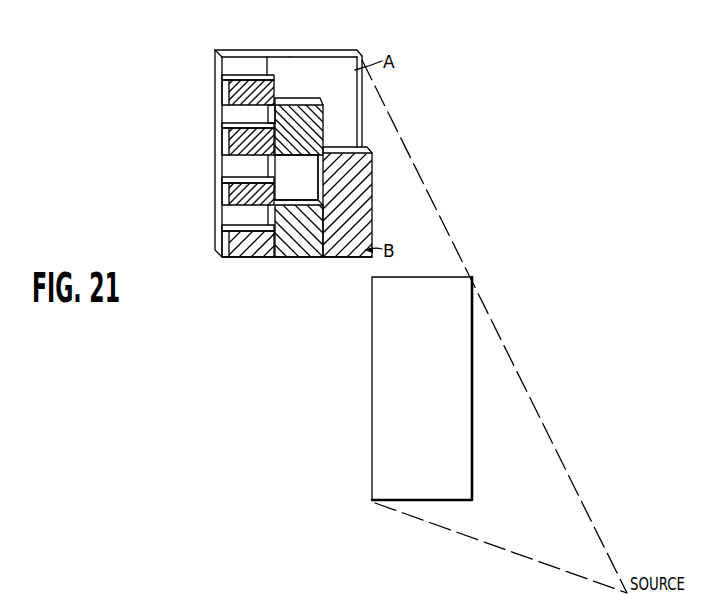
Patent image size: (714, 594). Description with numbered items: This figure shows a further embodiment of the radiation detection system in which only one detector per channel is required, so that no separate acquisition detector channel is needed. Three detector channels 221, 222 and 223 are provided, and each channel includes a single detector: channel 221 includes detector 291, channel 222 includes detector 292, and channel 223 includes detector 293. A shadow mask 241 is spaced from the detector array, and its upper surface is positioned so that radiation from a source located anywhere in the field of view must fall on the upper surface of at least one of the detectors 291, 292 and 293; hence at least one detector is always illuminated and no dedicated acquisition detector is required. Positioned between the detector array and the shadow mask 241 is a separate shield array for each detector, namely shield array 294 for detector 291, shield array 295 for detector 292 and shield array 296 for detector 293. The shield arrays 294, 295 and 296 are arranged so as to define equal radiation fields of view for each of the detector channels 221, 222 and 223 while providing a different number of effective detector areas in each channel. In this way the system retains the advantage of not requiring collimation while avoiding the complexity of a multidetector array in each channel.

The channel 221 is at (357, 50).
The channel 222 is at (287, 48).
The channel 223 is at (210, 50).
The shadow mask 241 is at (371, 357).
The detector 291 is at (338, 51).
The detector 292 is at (268, 54).
The detector 293 is at (227, 94).
The shield array 294 is at (362, 203).
The shield array 295 is at (297, 124).
The shield array 296 is at (225, 235).